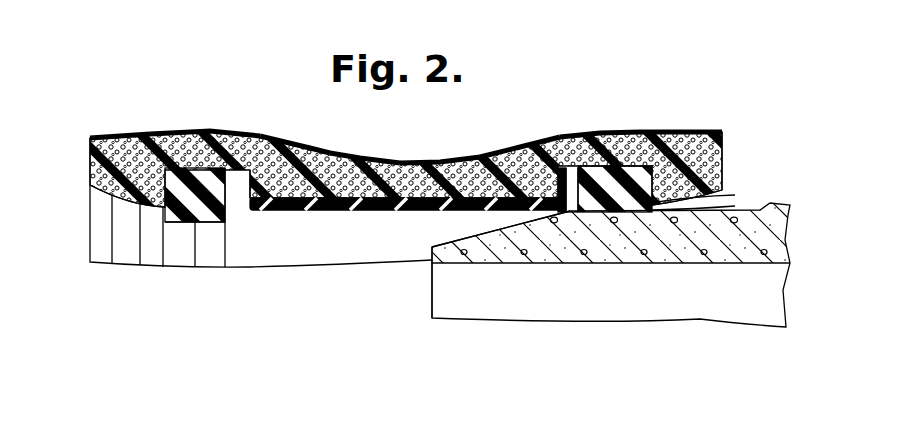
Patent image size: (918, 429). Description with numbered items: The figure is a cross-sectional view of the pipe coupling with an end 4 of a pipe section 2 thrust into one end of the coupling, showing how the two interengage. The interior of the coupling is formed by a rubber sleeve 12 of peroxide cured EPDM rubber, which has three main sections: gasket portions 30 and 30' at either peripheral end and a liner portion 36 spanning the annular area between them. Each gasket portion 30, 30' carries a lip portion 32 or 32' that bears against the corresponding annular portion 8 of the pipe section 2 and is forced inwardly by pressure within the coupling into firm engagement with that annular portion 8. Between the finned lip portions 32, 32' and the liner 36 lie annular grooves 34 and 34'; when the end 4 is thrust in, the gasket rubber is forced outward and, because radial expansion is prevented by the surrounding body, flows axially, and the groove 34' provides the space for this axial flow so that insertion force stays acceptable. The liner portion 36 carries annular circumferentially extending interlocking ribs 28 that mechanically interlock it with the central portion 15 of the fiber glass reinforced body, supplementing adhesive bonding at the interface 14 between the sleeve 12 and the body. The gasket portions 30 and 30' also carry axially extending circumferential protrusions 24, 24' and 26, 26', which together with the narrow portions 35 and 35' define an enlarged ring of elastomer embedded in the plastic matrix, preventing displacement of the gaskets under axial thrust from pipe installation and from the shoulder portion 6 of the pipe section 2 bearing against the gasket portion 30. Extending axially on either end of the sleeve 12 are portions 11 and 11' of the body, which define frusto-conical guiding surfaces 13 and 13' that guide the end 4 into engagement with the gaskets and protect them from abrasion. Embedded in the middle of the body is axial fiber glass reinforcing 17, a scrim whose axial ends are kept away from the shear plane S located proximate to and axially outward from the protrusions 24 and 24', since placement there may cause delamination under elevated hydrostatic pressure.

The pipe section 2 is at (730, 303).
The end of pipe section 4 is at (450, 265).
The shoulder portion of pipe section 6 is at (701, 201).
The annular portion of pipe section 8 is at (540, 213).
The axially extending portion of body 11 is at (378, 169).
The axially extending portion of body 11' is at (754, 159).
The rubber sleeve 12 is at (303, 262).
The frusto-conical guiding surface 13 is at (100, 212).
The frusto-conical guiding surface 13' is at (720, 188).
The interface between liner and body 14 is at (297, 205).
The central portion of body 15 is at (433, 160).
The axial fiber glass reinforcing 17 is at (127, 152).
The axially extending circumferential protrusion 24 is at (407, 161).
The axially extending circumferential protrusion 24' is at (641, 116).
The axially extending circumferential protrusion 26 is at (295, 141).
The axially extending circumferential protrusion 26' is at (520, 133).
The interlocking ribs 28 is at (367, 177).
The gasket portion 30 is at (171, 211).
The gasket portion 30' is at (636, 234).
The lip portion 32 is at (193, 263).
The lip portion 32' is at (559, 242).
The annular groove 34 is at (225, 236).
The annular groove 34' is at (559, 155).
The narrow portion 35 is at (255, 181).
The narrow portion 35' is at (587, 155).
The liner portion 36 is at (382, 213).
The shear plane S is at (95, 178).